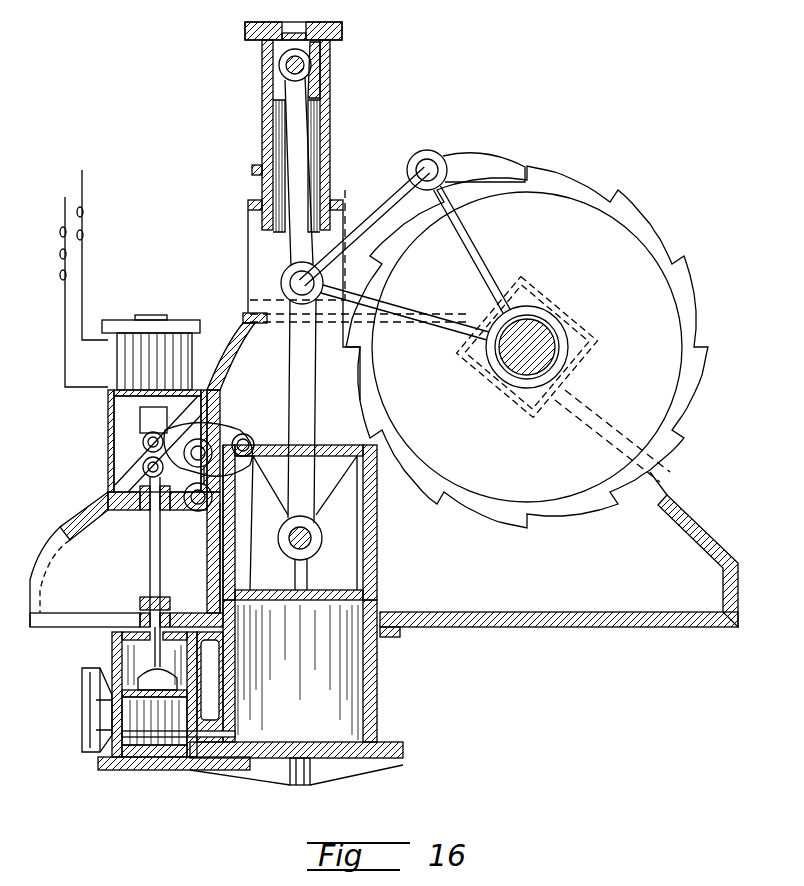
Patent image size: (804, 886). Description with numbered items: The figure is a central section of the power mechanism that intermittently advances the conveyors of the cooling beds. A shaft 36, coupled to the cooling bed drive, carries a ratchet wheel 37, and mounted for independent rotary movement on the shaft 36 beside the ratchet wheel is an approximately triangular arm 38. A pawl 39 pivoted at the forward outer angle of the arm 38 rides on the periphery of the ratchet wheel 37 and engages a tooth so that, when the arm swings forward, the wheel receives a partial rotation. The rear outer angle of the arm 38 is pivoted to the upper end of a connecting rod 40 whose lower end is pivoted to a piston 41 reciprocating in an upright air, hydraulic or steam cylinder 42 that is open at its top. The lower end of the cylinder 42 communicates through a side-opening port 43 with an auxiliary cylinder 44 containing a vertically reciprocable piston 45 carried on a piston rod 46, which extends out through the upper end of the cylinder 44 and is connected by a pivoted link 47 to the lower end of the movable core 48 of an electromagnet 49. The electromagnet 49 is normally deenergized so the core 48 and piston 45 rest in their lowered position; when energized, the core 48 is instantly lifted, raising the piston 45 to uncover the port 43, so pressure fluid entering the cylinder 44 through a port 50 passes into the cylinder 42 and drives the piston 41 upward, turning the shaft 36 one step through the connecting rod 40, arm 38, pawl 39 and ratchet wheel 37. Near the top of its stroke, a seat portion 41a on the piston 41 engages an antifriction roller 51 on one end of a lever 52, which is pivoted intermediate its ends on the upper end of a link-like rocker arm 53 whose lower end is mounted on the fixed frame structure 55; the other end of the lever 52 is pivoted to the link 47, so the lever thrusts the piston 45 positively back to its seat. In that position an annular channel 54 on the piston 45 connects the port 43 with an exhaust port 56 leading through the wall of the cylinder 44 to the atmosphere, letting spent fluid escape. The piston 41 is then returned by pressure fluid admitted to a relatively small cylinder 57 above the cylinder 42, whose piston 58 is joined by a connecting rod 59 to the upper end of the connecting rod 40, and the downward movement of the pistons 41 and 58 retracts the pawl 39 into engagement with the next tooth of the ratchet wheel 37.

The shaft 36 is at (540, 337).
The ratchet wheel 37 is at (688, 323).
The arm 38 is at (487, 250).
The pawl 39 is at (480, 160).
The connecting rod 40 is at (291, 368).
The piston 41 is at (364, 563).
The seat portion 41a is at (272, 421).
The cylinder 42 is at (378, 702).
The port 43 is at (227, 737).
The auxiliary cylinder 44 is at (122, 652).
The piston 45 is at (140, 757).
The piston rod 46 is at (151, 568).
The link 47 is at (150, 455).
The movable core 48 is at (145, 422).
The electromagnet 49 is at (172, 335).
The port 50 is at (160, 770).
The antifriction roller 51 is at (243, 433).
The lever 52 is at (188, 437).
The rocker arm 53 is at (208, 477).
The annular channel 54 is at (132, 732).
The frame structure 55 is at (220, 550).
The exhaust port 56 is at (82, 712).
The cylinder 57 is at (262, 62).
The piston 58 is at (295, 65).
The connecting rod 59 is at (301, 182).